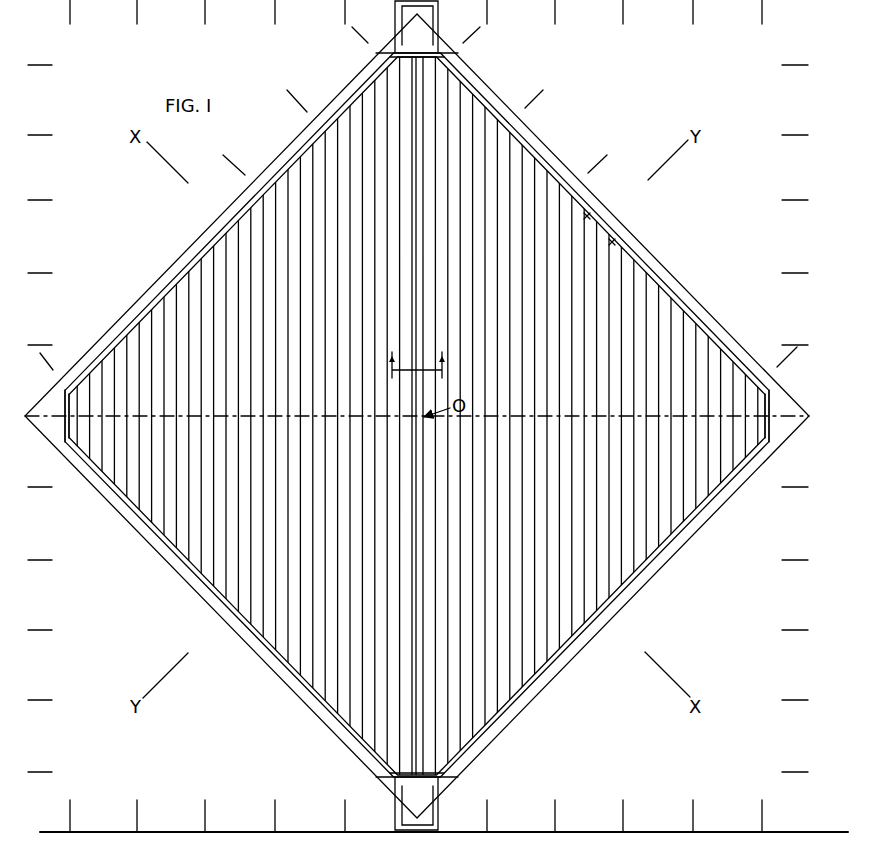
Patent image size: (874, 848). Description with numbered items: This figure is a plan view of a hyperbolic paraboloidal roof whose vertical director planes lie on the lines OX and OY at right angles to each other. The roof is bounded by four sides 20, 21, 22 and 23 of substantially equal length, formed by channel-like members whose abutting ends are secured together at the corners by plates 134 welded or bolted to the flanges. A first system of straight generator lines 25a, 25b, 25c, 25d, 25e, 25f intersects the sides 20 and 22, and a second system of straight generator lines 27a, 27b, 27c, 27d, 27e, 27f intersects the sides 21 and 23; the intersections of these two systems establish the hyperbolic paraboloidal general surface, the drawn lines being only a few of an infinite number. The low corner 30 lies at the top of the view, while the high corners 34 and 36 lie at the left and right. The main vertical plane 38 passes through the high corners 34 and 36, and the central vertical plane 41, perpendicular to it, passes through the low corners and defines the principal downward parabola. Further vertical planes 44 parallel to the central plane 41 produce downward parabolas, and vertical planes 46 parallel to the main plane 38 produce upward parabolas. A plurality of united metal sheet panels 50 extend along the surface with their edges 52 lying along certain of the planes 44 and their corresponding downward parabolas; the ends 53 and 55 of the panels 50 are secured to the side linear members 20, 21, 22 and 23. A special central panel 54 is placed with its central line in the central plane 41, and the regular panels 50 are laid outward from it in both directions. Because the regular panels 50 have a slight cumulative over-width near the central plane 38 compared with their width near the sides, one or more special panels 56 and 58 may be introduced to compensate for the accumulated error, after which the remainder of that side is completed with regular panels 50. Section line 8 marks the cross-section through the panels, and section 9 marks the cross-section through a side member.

The section line 8- 8 is at (415, 373).
The section line 9 is at (613, 218).
The side 20 is at (663, 570).
The side 21 is at (686, 291).
The side 22 is at (176, 261).
The side 23 is at (344, 750).
The straight generator line 25a is at (467, 787).
The straight generator line 25b is at (528, 723).
The straight generator line 25c is at (592, 658).
The straight generator line 25d is at (653, 593).
The straight generator line 25e is at (717, 528).
The straight generator line 25f is at (778, 463).
The straight generator line 27a is at (53, 470).
The straight generator line 27b is at (118, 532).
The straight generator line 27c is at (182, 595).
The straight generator line 27d is at (245, 660).
The straight generator line 27e is at (308, 727).
The straight generator line 27f is at (360, 793).
The low corner 30 is at (340, 846).
The high corner 34 is at (28, 404).
The high corner 36 is at (803, 404).
The main vertical plane 38 is at (247, 413).
The central vertical plane 41 is at (420, 583).
The vertical plane 44 is at (70, 22).
The vertical plane 46 is at (52, 200).
The regular roof panel 50 is at (294, 465).
The panel edge 52 is at (276, 498).
The panel end 53 is at (480, 100).
The special central panel 54 is at (428, 677).
The panel end 55 is at (490, 712).
The special panel 56 is at (364, 107).
The special panel 58 is at (112, 351).
The plate 134 is at (428, 40).